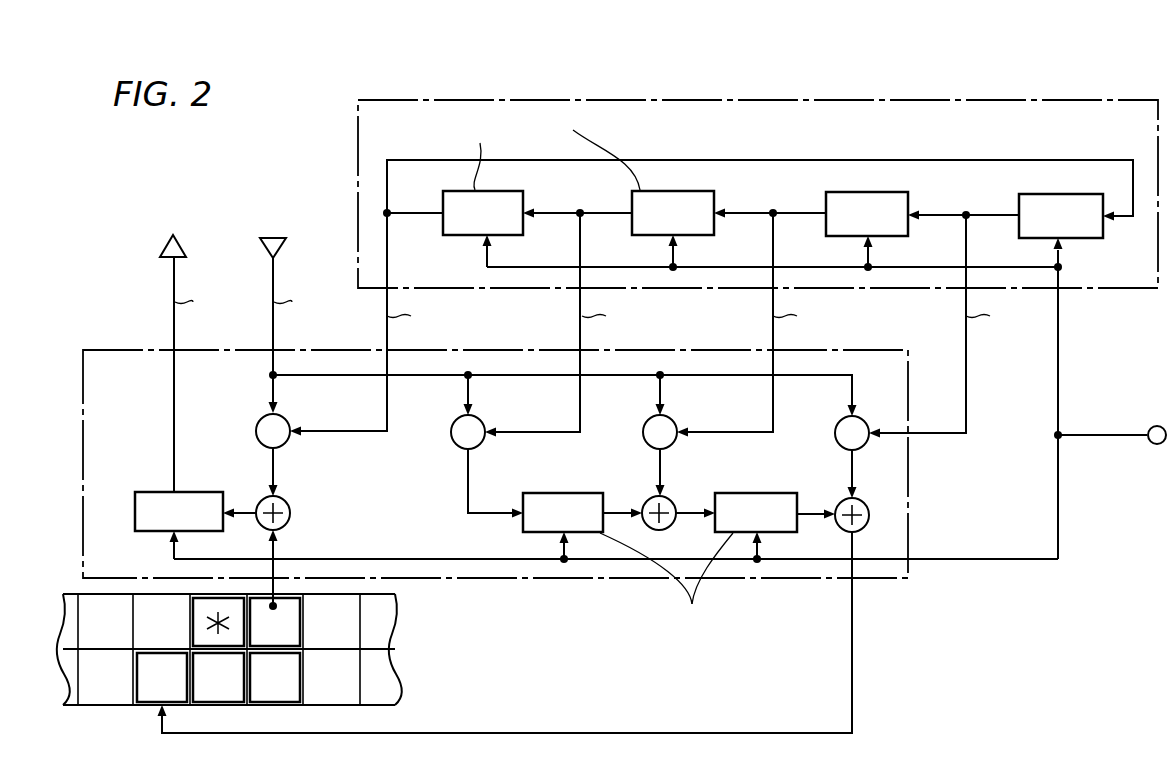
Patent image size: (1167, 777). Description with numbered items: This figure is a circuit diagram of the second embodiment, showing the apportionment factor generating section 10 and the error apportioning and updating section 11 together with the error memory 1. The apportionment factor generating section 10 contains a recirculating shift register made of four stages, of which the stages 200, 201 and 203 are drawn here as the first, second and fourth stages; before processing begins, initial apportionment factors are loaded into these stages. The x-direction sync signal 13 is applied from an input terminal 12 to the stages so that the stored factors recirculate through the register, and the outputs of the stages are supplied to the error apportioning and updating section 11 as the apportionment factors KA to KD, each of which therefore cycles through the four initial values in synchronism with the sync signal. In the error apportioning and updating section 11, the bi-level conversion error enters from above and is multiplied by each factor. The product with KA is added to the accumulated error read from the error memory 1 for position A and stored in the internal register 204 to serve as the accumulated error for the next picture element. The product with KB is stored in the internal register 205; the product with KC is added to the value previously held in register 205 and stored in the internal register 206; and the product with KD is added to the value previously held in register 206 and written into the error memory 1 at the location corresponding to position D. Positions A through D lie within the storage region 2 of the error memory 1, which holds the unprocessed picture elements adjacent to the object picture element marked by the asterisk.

The apportionment factor generating section 10 is at (358, 118).
The shift register stage 200 is at (489, 191).
The shift register stage 201 is at (678, 191).
The shift register stage 203 is at (865, 192).
The internal register 204 is at (1049, 194).
The internal register 205 is at (583, 493).
The internal register 206 is at (778, 493).
The error apportioning and updating section 11 is at (868, 582).
The input terminal 12 is at (1157, 426).
The x-direction sync signal 13 is at (1059, 368).
The error memory 1 is at (395, 631).
The storage region 2 is at (303, 685).